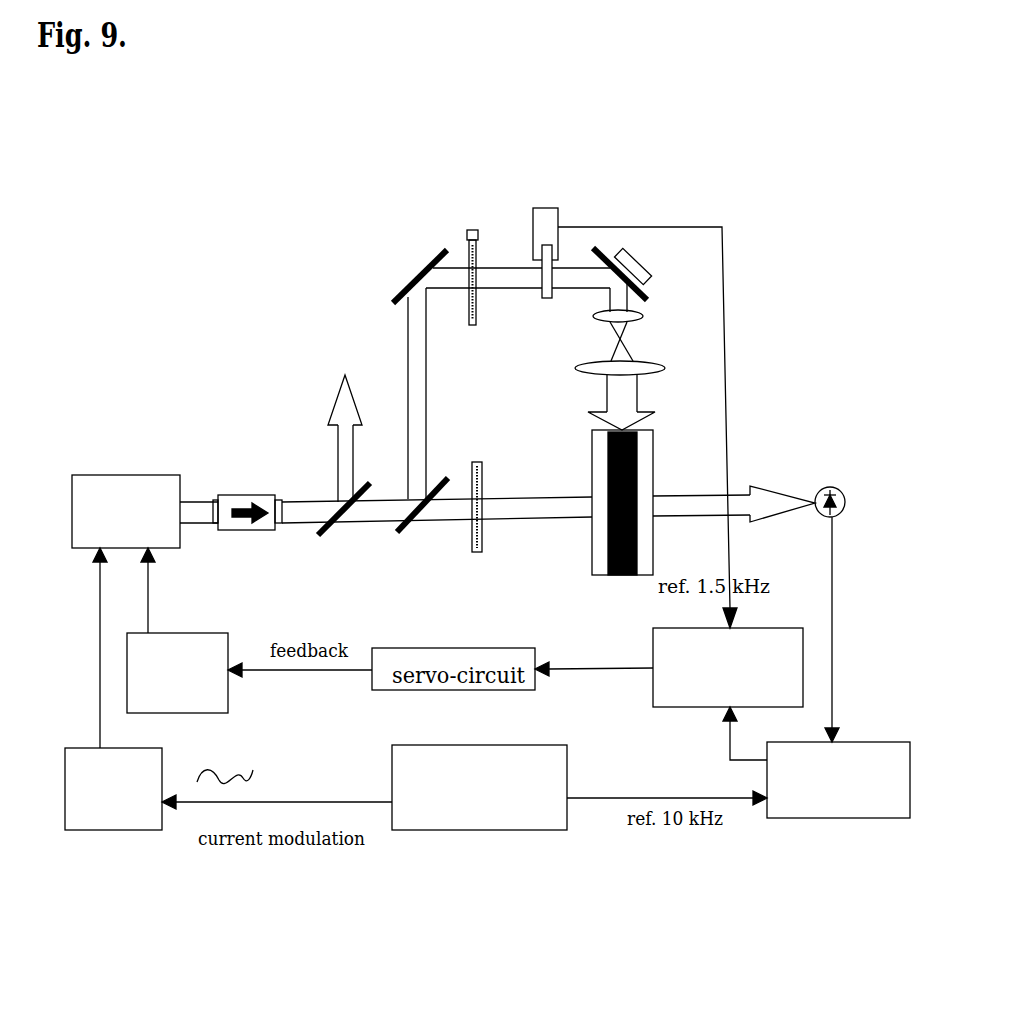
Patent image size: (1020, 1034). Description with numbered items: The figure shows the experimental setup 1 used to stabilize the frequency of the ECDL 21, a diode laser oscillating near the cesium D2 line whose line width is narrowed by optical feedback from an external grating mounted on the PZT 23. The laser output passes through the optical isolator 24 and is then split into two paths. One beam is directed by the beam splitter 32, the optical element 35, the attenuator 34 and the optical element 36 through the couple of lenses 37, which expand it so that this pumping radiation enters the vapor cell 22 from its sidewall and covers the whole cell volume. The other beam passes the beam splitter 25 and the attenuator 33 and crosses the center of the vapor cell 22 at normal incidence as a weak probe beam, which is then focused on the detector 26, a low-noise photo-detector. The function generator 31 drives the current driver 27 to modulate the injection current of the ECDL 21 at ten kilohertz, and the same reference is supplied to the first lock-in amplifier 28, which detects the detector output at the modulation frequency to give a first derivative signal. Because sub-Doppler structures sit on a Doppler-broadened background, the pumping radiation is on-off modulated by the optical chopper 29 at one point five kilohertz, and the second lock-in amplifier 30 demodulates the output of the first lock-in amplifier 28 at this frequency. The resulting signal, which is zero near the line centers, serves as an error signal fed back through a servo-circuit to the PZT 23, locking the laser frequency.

The laser spectroscopy apparatus 1 is at (489, 131).
The ECDL 21 is at (127, 475).
The vapor cell 22 is at (607, 575).
The PZT 23 is at (177, 633).
The optical isolator 24 is at (248, 493).
The beam splitter 25 is at (447, 475).
The detector 26 is at (845, 500).
The current driver 27 is at (113, 830).
The first lock-in amplifier 28 is at (847, 813).
The optical chopper 29 is at (537, 207).
The second lock-in amplifier 30 is at (732, 612).
The function generator 31 is at (480, 830).
The beam splitter 32 is at (317, 540).
The attenuator 33 is at (486, 505).
The attenuator 34 is at (473, 230).
The optical element 35 is at (447, 250).
The optical element 36 is at (593, 245).
The couple of lenses 37 is at (680, 373).